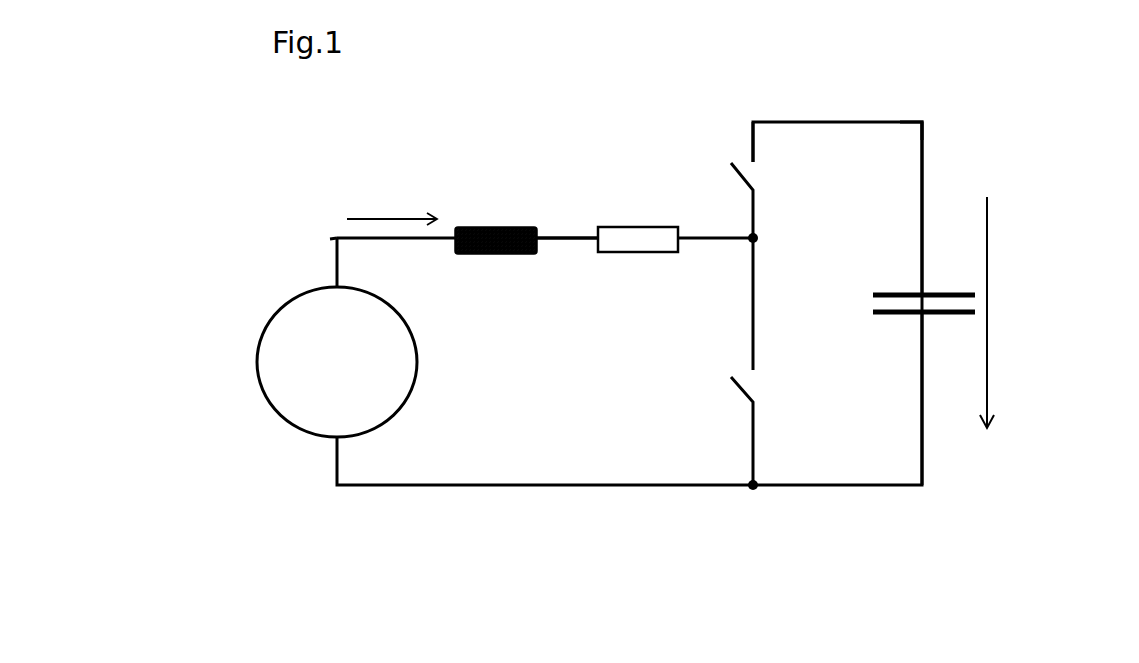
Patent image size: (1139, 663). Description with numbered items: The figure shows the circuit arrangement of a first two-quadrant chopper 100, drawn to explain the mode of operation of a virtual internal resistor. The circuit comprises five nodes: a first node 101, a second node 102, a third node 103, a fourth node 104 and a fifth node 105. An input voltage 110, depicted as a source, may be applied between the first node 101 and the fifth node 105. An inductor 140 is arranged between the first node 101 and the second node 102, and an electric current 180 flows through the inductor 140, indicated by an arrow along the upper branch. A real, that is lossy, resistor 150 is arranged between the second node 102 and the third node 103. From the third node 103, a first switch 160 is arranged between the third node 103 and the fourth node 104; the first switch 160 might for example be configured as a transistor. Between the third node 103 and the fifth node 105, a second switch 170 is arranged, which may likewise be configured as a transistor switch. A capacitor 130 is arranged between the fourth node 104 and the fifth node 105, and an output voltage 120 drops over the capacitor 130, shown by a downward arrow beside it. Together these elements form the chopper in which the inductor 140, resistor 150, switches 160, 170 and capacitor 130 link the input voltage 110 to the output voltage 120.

The first two-quadrant chopper 100 is at (358, 536).
The first node 101 is at (328, 240).
The second node 102 is at (574, 242).
The third node 103 is at (758, 240).
The fourth node 104 is at (922, 122).
The fifth node 105 is at (757, 488).
The input voltage 110 is at (318, 390).
The output voltage 120 is at (990, 303).
The capacitor 130 is at (892, 316).
The inductor 140 is at (498, 226).
The resistor 150 is at (640, 226).
The first switch 160 is at (747, 166).
The second switch 170 is at (750, 395).
The electric current 180 is at (388, 218).